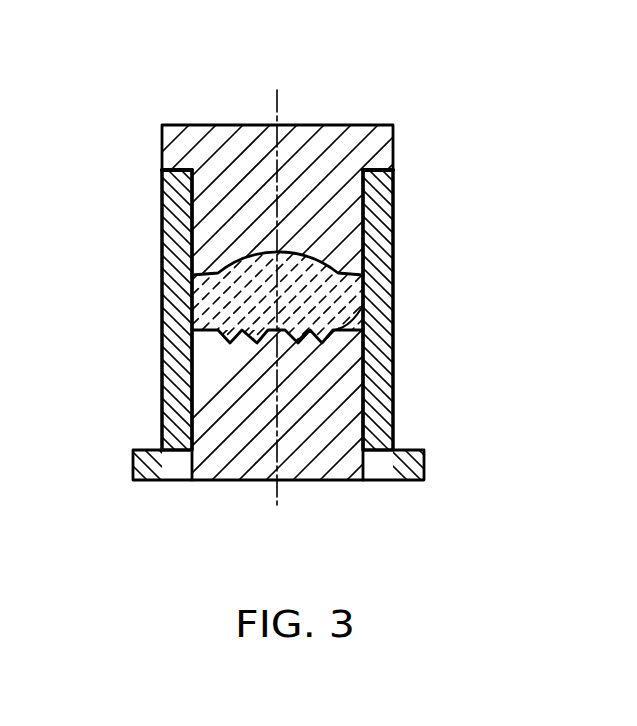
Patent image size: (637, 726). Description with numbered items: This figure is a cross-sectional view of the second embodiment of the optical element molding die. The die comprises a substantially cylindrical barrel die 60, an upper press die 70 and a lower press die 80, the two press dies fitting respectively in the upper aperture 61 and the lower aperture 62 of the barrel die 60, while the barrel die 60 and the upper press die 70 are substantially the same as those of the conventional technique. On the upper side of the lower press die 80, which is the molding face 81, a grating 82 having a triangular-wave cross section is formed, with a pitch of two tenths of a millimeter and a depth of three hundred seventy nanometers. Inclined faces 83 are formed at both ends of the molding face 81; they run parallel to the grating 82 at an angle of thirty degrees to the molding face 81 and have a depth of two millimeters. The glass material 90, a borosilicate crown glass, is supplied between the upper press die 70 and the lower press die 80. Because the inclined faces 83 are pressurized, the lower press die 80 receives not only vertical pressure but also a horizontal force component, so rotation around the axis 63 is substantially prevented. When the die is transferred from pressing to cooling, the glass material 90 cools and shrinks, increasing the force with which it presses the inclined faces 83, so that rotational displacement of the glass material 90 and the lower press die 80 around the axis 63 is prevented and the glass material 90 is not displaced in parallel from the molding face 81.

The barrel die 60 is at (393, 217).
The upper aperture 61 is at (393, 170).
The lower aperture 62 is at (378, 455).
The axis 63 is at (285, 92).
The upper press die 70 is at (240, 125).
The lower press die 80 is at (240, 425).
The molding face 81 is at (160, 306).
The grating 82 is at (365, 304).
The inclined faces 83 is at (160, 335).
The glass material 90 is at (160, 268).